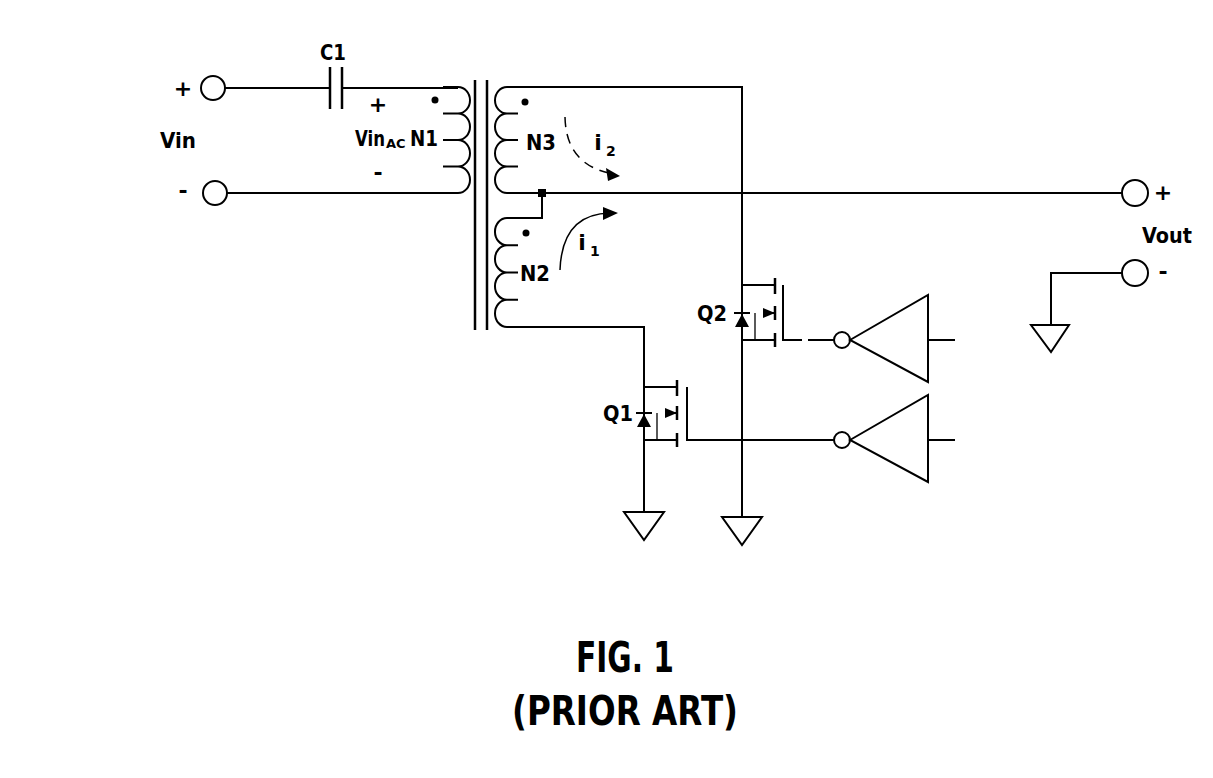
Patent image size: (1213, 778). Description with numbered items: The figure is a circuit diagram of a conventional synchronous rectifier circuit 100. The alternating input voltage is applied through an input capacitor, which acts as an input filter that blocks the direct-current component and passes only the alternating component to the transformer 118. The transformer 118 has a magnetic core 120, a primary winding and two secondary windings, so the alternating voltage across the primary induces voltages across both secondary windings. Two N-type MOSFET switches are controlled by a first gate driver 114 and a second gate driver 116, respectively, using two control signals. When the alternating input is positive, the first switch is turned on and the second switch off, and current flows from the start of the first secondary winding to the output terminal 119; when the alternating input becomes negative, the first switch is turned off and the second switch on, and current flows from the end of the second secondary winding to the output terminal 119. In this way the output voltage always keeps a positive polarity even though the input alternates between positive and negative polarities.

The synchronous rectifier circuit 100 is at (902, 120).
The gate driver 114 is at (925, 438).
The gate driver 116 is at (925, 338).
The transformer 118 is at (476, 243).
The output terminal 119 is at (1131, 180).
The magnetic core 120 is at (446, 205).